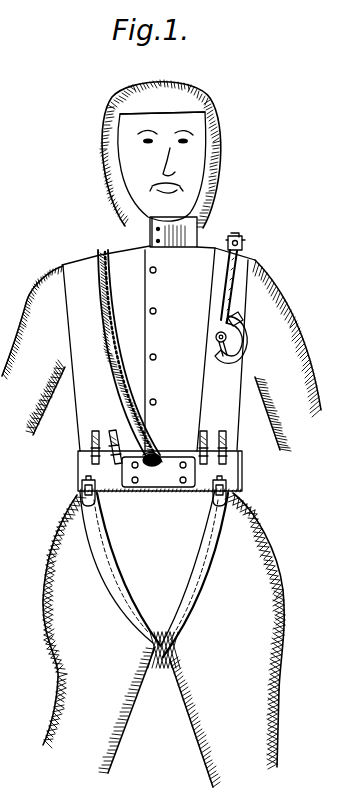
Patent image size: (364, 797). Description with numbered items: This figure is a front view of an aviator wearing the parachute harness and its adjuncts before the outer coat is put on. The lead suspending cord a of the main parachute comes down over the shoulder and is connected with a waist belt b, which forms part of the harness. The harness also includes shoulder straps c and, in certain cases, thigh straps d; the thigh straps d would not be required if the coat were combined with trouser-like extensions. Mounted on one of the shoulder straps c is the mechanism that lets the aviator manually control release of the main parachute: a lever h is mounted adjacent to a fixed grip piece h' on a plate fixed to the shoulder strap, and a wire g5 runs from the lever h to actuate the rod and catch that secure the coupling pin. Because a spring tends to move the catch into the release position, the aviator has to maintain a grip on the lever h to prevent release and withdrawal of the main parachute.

The lead suspending cord a is at (100, 254).
The waist belt b is at (78, 466).
The shoulder straps c is at (237, 387).
The thigh straps d is at (95, 523).
The wire g5 is at (230, 288).
The lever h is at (272, 338).
The fixed grip piece h' is at (277, 303).